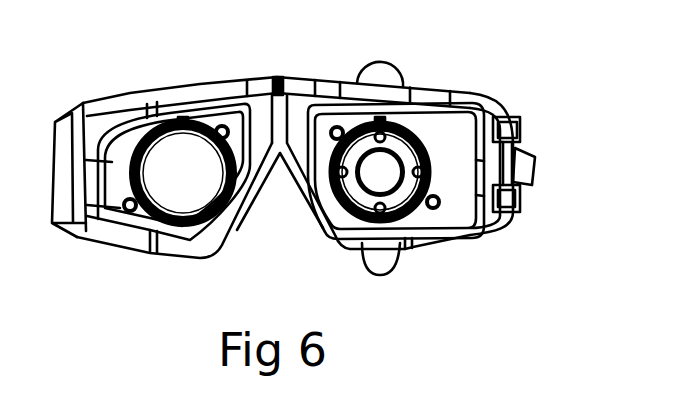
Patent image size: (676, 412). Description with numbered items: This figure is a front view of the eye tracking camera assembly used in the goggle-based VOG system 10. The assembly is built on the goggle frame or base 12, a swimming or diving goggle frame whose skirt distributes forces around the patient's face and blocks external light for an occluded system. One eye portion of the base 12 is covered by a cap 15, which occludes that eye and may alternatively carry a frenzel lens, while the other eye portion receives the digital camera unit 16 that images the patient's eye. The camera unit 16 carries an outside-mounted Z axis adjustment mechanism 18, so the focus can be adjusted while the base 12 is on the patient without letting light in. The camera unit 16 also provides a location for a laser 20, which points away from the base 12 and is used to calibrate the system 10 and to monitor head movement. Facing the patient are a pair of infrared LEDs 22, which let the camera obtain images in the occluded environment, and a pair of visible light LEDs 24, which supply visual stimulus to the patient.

The VOG system 10 is at (568, 93).
The goggle frame or base 12 is at (188, 97).
The cap 15 is at (175, 192).
The digital camera unit 16 is at (387, 177).
The Z axis adjustment mechanism 18 is at (380, 262).
The laser 20 is at (380, 73).
The infrared LEDs 22 is at (368, 125).
The visible light LEDs 24 is at (418, 168).